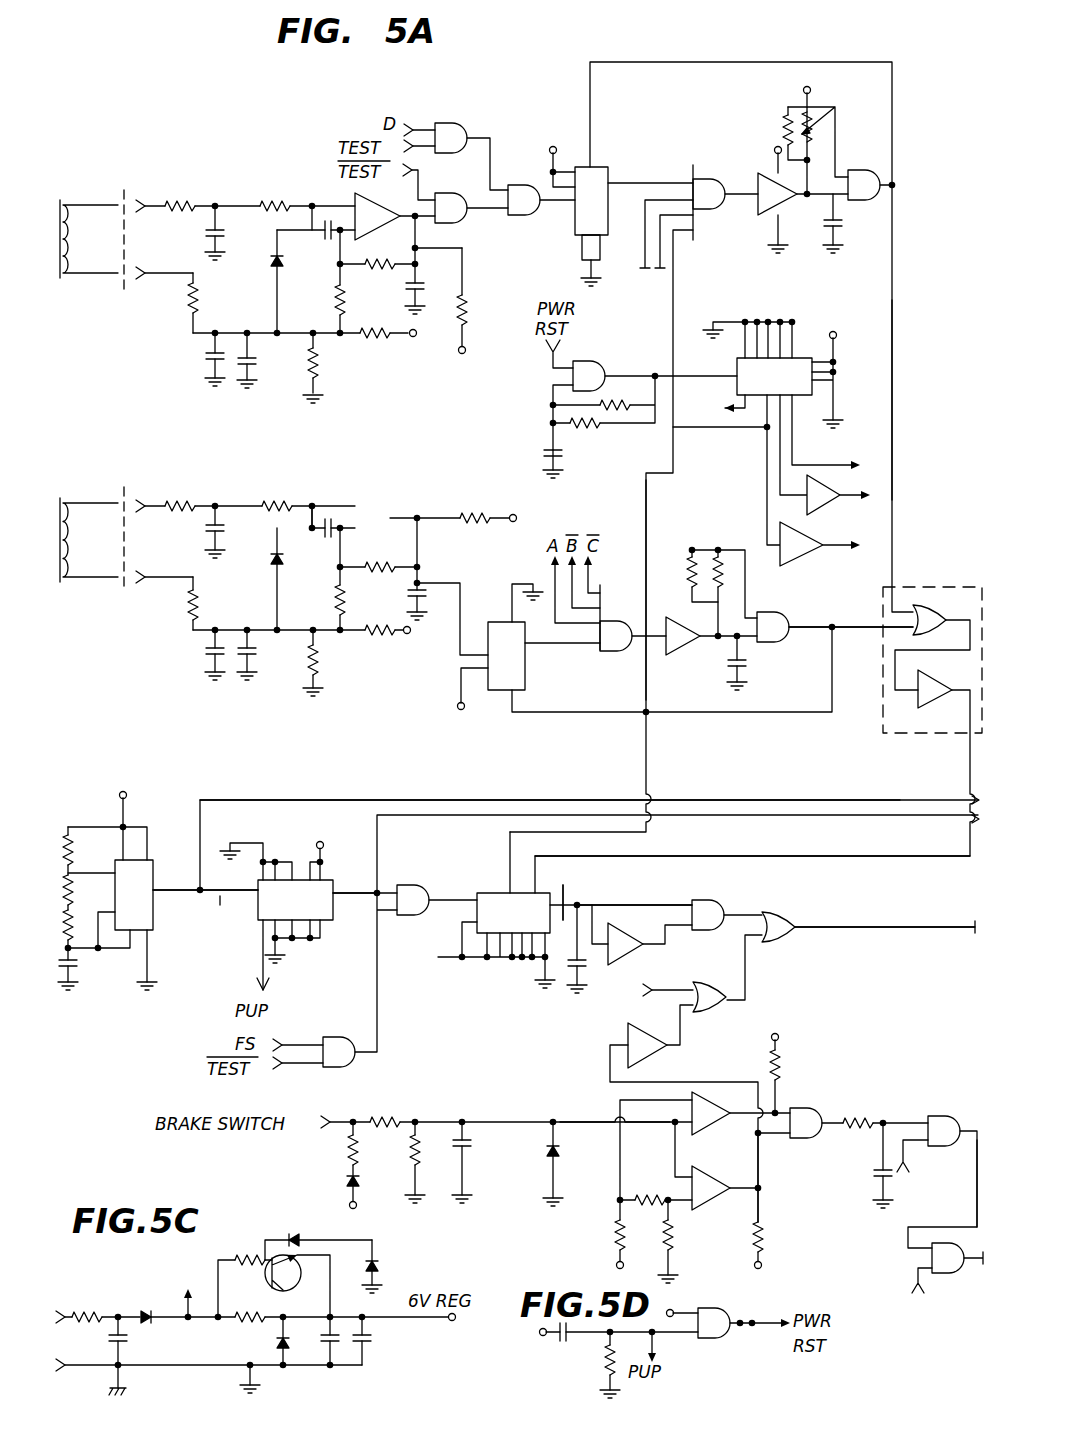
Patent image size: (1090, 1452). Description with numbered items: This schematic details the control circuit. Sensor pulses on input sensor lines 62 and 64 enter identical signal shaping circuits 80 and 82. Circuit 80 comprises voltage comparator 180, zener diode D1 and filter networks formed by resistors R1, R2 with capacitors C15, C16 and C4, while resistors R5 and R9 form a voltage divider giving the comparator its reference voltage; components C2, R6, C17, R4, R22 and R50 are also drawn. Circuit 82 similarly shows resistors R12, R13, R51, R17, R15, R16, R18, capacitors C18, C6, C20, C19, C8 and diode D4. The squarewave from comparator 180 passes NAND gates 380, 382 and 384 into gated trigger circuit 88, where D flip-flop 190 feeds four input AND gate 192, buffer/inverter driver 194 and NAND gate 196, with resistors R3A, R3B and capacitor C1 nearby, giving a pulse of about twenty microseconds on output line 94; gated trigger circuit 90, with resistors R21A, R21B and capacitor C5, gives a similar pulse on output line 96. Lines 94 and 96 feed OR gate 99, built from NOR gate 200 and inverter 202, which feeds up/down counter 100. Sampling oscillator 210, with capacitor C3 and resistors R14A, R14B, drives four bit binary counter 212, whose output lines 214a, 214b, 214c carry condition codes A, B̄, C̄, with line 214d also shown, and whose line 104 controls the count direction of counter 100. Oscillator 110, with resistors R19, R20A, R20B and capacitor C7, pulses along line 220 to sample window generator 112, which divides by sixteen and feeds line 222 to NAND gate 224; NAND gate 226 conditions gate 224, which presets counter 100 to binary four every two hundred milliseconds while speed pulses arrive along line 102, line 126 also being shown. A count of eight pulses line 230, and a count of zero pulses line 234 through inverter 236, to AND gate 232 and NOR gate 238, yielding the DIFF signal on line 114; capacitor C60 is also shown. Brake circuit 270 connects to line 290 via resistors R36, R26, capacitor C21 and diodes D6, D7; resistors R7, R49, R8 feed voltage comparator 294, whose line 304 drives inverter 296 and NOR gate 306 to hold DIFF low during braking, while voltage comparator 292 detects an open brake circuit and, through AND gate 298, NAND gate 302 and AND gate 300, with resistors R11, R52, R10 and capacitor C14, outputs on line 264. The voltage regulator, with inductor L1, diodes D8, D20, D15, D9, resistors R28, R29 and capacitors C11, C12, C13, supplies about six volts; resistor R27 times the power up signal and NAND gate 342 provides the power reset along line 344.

In FIG. 5A, the input sensor line 62 is at (162, 190).
In FIG. 5A, the resistor R1 is at (180, 195).
In FIG. 5A, the resistor R2 is at (272, 195).
In FIG. 5A, the signal shaping circuit 80 is at (290, 192).
In FIG. 5A, the voltage comparator 180 is at (362, 190).
In FIG. 5A, the capacitor C15 is at (212, 233).
In FIG. 5A, the zener diode D1 is at (270, 258).
In FIG. 5A, the capacitor C2 is at (328, 240).
In FIG. 5A, the resistor R6 is at (380, 270).
In FIG. 5A, the capacitor C17 is at (432, 288).
In FIG. 5A, the resistor R4 is at (336, 300).
In FIG. 5A, the resistor R22 is at (188, 303).
In FIG. 5A, the resistor R50 is at (465, 310).
In FIG. 5A, the resistor R5 is at (380, 338).
In FIG. 5A, the capacitor C16 is at (212, 358).
In FIG. 5A, the capacitor C4 is at (252, 362).
In FIG. 5A, the resistor R9 is at (320, 360).
In FIG. 5A, the NAND gate 380 is at (458, 123).
In FIG. 5A, the NAND gate 382 is at (468, 185).
In FIG. 5A, the NAND gate 384 is at (530, 185).
In FIG. 5A, the D flip-flop 190 is at (612, 172).
In FIG. 5A, the gated trigger circuit 88 is at (674, 106).
In FIG. 5A, the four input AND gate 192 is at (725, 208).
In FIG. 5A, the buffer/inverter driver 194 is at (760, 173).
In FIG. 5A, the resistor R3B is at (786, 122).
In FIG. 5A, the potentiometer R3A is at (822, 140).
In FIG. 5A, the NAND gate 196 is at (858, 170).
In FIG. 5A, the capacitor C1 is at (838, 218).
In FIG. 5A, the output line 94 is at (892, 273).
In FIG. 5A, the sampling oscillator 210 is at (612, 352).
In FIG. 5A, the four bit binary counter 212 is at (773, 373).
In FIG. 5A, the output line 214d is at (742, 405).
In FIG. 5A, the output line 214a is at (797, 443).
In FIG. 5A, the output line 214b is at (780, 456).
In FIG. 5A, the output line 214c is at (767, 482).
In FIG. 5A, the capacitor C3 is at (548, 452).
In FIG. 5A, the resistor R14B is at (618, 412).
In FIG. 5A, the resistor R14A is at (590, 430).
In FIG. 5A, the line 104 is at (645, 505).
In FIG. 5A, the resistor R21A is at (688, 565).
In FIG. 5A, the resistor R21B is at (735, 546).
In FIG. 5A, the output line 96 is at (860, 620).
In FIG. 5A, the NOR gate 200 is at (928, 605).
In FIG. 5A, the capacitor C5 is at (745, 665).
In FIG. 5A, the gated trigger circuit 90 is at (584, 686).
In FIG. 5A, the inverter 202 is at (940, 700).
In FIG. 5A, the OR gate 99 is at (883, 735).
In FIG. 5A, the input sensor line 64 is at (160, 493).
In FIG. 5A, the resistor R12 is at (187, 496).
In FIG. 5A, the resistor R13 is at (268, 496).
In FIG. 5A, the signal shaping circuit 82 is at (307, 496).
In FIG. 5A, the resistor R51 is at (478, 516).
In FIG. 5A, the capacitor C18 is at (212, 530).
In FIG. 5A, the diode D4 is at (270, 560).
In FIG. 5A, the capacitor C6 is at (328, 538).
In FIG. 5A, the resistor R17 is at (382, 572).
In FIG. 5A, the resistor R15 is at (335, 598).
In FIG. 5A, the capacitor C20 is at (425, 600).
In FIG. 5A, the resistor R16 is at (380, 638).
In FIG. 5A, the capacitor C19 is at (195, 655).
In FIG. 5A, the capacitor C8 is at (260, 655).
In FIG. 5A, the resistor R18 is at (320, 672).
In FIG. 5A, the oscillator 110 is at (158, 865).
In FIG. 5A, the resistor R19 is at (64, 845).
In FIG. 5A, the potentiometer section R20A is at (64, 885).
In FIG. 5A, the potentiometer section R20B is at (64, 928).
In FIG. 5A, the capacitor C7 is at (73, 970).
In FIG. 5A, the clock line 126 is at (365, 798).
In FIG. 5A, the line 220 is at (205, 910).
In FIG. 5A, the sample window generator 112 is at (276, 916).
In FIG. 5A, the line 222 is at (350, 890).
In FIG. 5A, the NAND gate 224 is at (428, 890).
In FIG. 5A, the up/down counter 100 is at (496, 940).
In FIG. 5A, the line 234 is at (563, 891).
In FIG. 5A, the line 230 is at (640, 902).
In FIG. 5A, the AND gate 232 is at (724, 897).
In FIG. 5A, the NOR gate 238 is at (785, 914).
In FIG. 5A, the line 114 is at (905, 922).
In FIG. 5A, the line 102 is at (785, 855).
In FIG. 5A, the inverter 236 is at (640, 955).
In FIG. 5A, the capacitor C60 is at (585, 965).
In FIG. 5A, the inverter 296 is at (640, 1022).
In FIG. 5A, the NOR gate 306 is at (715, 1012).
In FIG. 5A, the NAND gate 226 is at (345, 1038).
In FIG. 5A, the line 290 is at (390, 1118).
In FIG. 5A, the resistor R36 is at (350, 1147).
In FIG. 5A, the diode D6 is at (347, 1182).
In FIG. 5A, the resistor R26 is at (412, 1142).
In FIG. 5A, the capacitor C21 is at (466, 1150).
In FIG. 5A, the diode D7 is at (560, 1155).
In FIG. 5A, the brake circuit 270 is at (600, 1113).
In FIG. 5A, the voltage comparator 292 is at (722, 1122).
In FIG. 5A, the voltage comparator 294 is at (708, 1205).
In FIG. 5A, the resistor R49 is at (645, 1188).
In FIG. 5A, the resistor R7 is at (615, 1235).
In FIG. 5A, the resistor R8 is at (664, 1235).
In FIG. 5A, the resistor R11 is at (765, 1235).
In FIG. 5A, the line 304 is at (760, 1170).
In FIG. 5A, the resistor R52 is at (780, 1065).
In FIG. 5A, the AND gate 298 is at (805, 1108).
In FIG. 5A, the resistor R10 is at (864, 1112).
In FIG. 5A, the capacitor C14 is at (878, 1190).
In FIG. 5A, the NAND gate 302 is at (955, 1115).
In FIG. 5A, the line 264 is at (983, 1255).
In FIG. 5A, the AND gate 300 is at (952, 1277).
In FIG. 5C, the inductor L1 is at (92, 1310).
In FIG. 5C, the diode D8 is at (152, 1310).
In FIG. 5C, the resistor R29 is at (265, 1310).
In FIG. 5C, the resistor R28 is at (250, 1255).
In FIG. 5C, the zener diode D20 is at (300, 1240).
In FIG. 5C, the diode D15 is at (378, 1268).
In FIG. 5C, the zener diode D9 is at (277, 1340).
In FIG. 5C, the capacitor C11 is at (127, 1337).
In FIG. 5C, the capacitor C12 is at (326, 1345).
In FIG. 5C, the capacitor C13 is at (370, 1342).
In FIG. 5D, the resistor R27 is at (605, 1362).
In FIG. 5D, the NAND gate 342 is at (708, 1340).
In FIG. 5D, the line 344 is at (762, 1322).